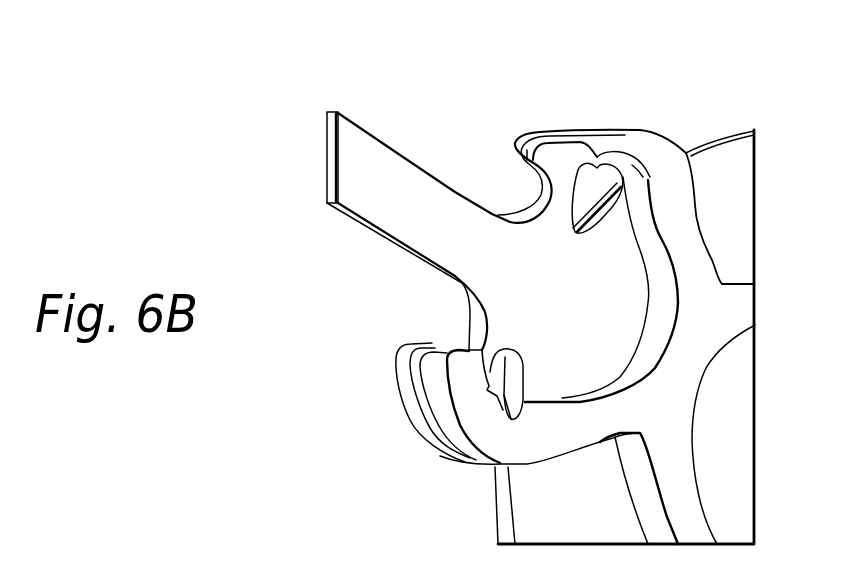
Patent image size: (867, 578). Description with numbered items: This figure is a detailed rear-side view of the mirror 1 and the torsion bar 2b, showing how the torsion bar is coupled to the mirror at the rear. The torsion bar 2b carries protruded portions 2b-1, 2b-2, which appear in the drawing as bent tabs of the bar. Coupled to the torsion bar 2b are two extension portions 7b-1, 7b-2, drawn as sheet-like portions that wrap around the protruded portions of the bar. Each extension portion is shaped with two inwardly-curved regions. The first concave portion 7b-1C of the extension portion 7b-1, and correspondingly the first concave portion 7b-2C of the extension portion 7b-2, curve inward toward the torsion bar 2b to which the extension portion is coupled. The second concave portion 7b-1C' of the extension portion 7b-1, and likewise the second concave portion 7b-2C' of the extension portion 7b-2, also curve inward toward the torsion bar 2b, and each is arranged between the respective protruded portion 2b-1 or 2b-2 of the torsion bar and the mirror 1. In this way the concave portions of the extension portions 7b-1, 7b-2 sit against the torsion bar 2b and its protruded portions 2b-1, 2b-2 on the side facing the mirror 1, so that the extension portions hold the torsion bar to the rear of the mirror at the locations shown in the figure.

The mirror 1 is at (740, 460).
The torsion bar 2b is at (385, 165).
The protruded portion of the torsion bar 2b-1 is at (413, 398).
The protruded portion of the torsion bar 2b-2 is at (520, 148).
The extension portion 7b-1 is at (480, 418).
The first concave portion 7b-1C is at (387, 336).
The second concave portion 7b-1C' is at (562, 374).
The extension portion 7b-2 is at (625, 143).
The first concave portion 7b-2C is at (590, 122).
The second concave portion 7b-2C' is at (722, 132).